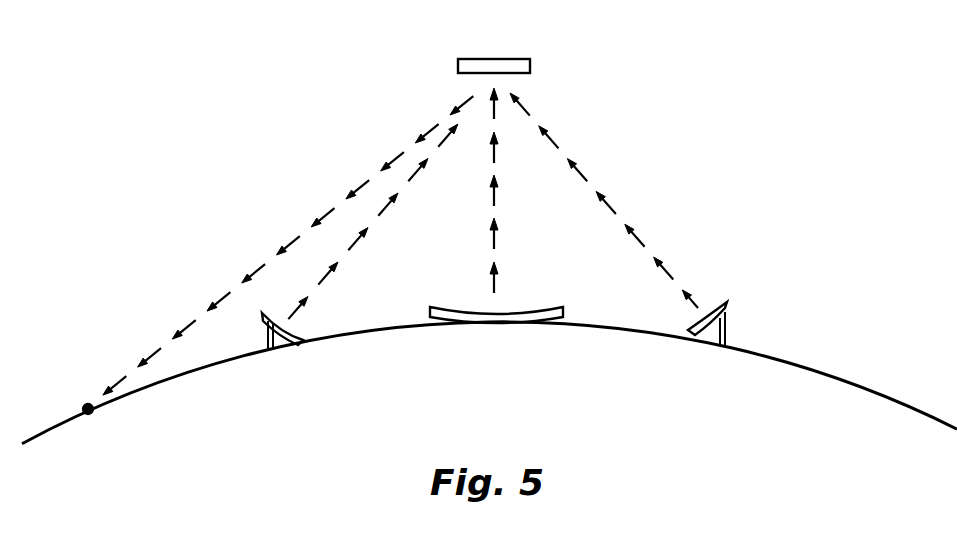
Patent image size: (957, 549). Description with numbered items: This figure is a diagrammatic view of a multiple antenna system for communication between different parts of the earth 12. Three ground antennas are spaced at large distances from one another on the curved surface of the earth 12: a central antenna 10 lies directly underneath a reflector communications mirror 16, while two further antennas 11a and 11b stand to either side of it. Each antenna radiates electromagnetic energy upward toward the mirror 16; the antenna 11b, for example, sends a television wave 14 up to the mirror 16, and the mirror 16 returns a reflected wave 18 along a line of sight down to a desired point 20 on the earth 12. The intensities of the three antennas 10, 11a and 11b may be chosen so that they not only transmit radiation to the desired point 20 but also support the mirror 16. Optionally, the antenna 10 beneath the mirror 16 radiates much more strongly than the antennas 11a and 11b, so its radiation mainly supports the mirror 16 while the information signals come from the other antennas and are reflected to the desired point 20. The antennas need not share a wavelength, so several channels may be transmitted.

The television transmitting antenna 10 is at (495, 330).
The antenna 11a is at (285, 364).
The antenna 11b is at (706, 349).
The earth 12 is at (883, 392).
The television wave 14 is at (646, 243).
The reflector communications mirror 16 is at (472, 56).
The reflected wave 18 is at (300, 244).
The desired point 20 is at (86, 405).